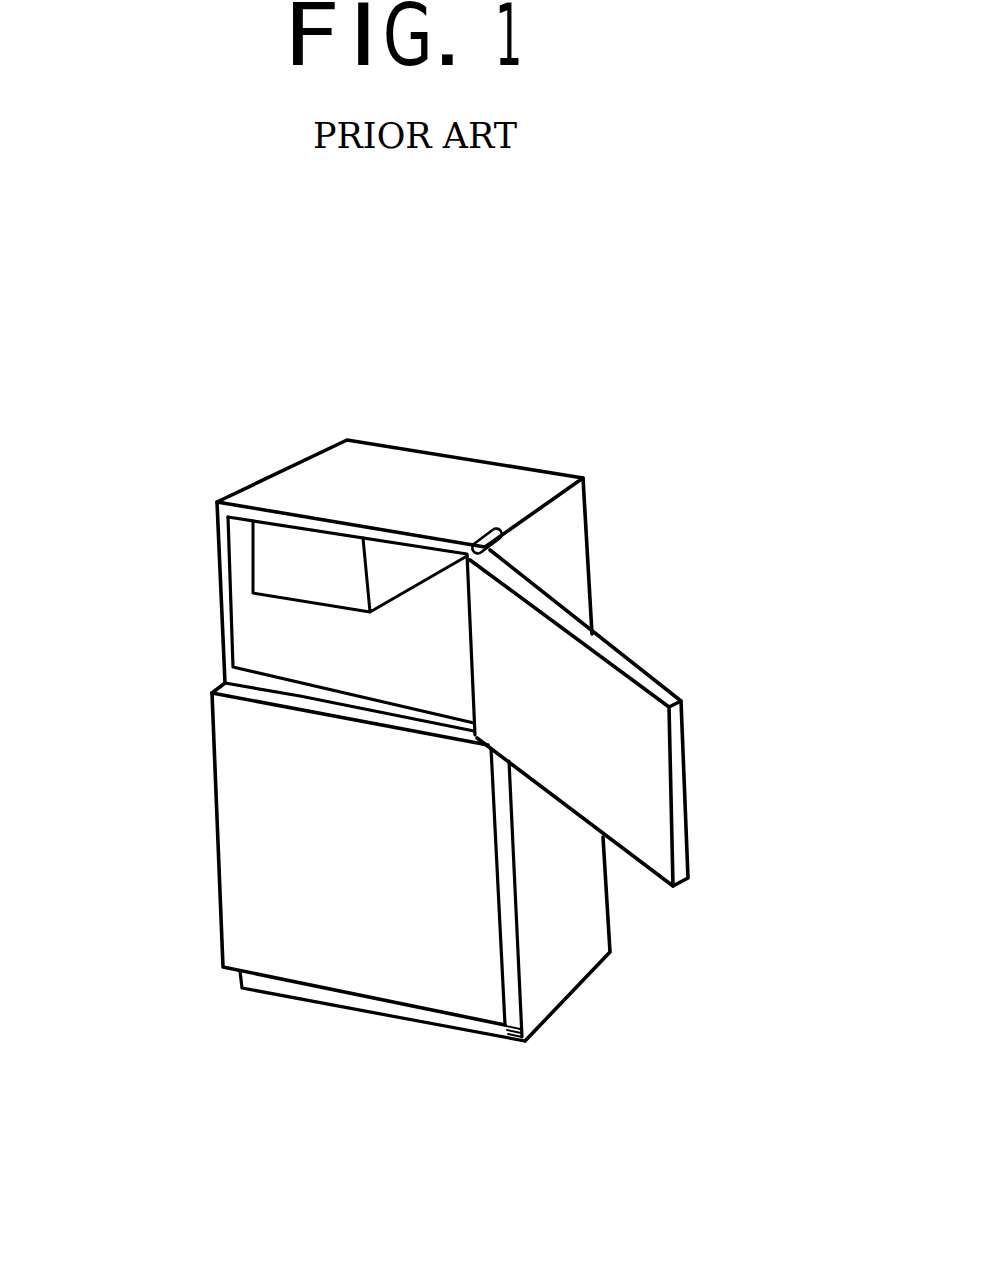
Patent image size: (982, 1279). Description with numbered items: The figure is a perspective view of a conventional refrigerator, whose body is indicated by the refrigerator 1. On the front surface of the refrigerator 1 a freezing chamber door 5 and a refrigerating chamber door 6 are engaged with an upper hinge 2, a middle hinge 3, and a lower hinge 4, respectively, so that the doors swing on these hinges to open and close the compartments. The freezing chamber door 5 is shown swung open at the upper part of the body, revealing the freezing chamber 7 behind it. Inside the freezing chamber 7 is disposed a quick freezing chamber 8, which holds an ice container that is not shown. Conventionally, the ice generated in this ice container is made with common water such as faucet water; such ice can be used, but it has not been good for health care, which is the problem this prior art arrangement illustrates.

The body of a refrigerator 1 is at (656, 569).
The upper hinge 2 is at (495, 527).
The middle hinge 3 is at (473, 736).
The lower hinge 4 is at (525, 1041).
The freezing chamber door 5 is at (647, 780).
The refrigerating chamber door 6 is at (227, 732).
The freezing chamber 7 is at (245, 638).
The quick freezing chamber 8 is at (257, 570).